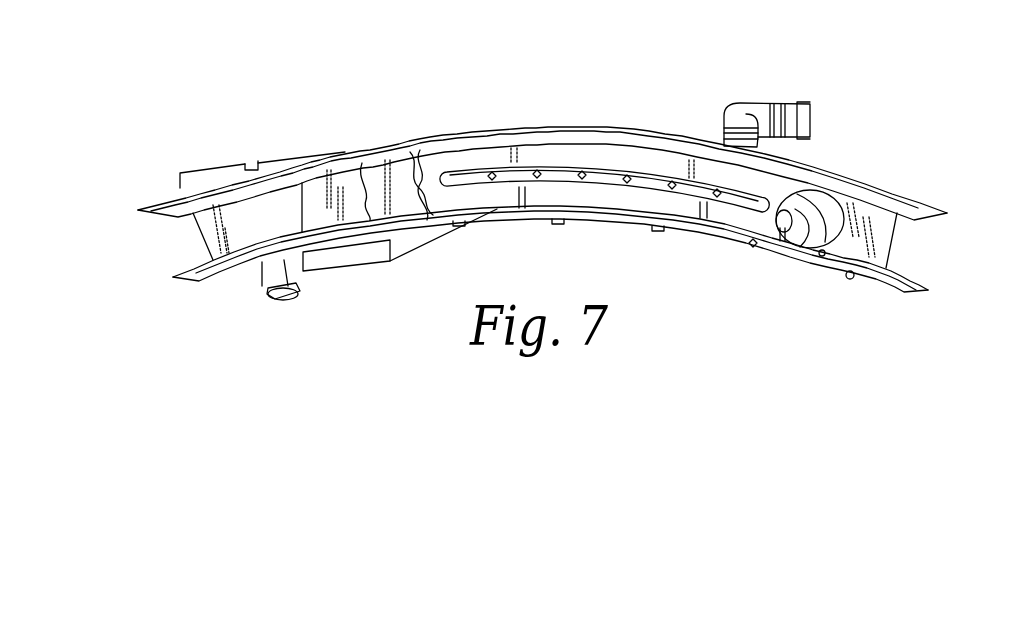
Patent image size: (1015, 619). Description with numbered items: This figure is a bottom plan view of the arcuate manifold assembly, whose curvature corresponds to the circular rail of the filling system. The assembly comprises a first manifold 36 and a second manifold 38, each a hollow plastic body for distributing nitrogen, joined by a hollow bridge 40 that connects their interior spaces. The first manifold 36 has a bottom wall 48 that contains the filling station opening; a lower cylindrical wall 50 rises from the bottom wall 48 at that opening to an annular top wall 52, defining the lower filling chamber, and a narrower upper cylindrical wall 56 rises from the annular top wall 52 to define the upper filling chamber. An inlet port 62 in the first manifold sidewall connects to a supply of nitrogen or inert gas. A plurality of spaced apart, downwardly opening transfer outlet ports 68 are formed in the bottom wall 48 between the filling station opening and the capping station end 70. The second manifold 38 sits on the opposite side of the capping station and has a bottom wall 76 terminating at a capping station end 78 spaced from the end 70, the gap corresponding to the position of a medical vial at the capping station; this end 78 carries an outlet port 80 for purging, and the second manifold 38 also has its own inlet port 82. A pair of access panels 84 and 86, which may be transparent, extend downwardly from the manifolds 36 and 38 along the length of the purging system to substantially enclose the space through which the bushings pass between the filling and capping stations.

The first manifold 36 is at (903, 250).
The second manifold 38 is at (186, 236).
The bridge 40 is at (379, 270).
The bottom wall 48 is at (890, 227).
The lower cylindrical wall 50 is at (822, 192).
The annular top wall 52 is at (823, 250).
The upper cylindrical wall 56 is at (789, 212).
The inlet port 62 is at (748, 102).
The transfer outlet ports 68 is at (582, 181).
The capping station end 70 is at (416, 148).
The bottom wall 76 is at (302, 198).
The capping station end 78 is at (388, 147).
The outlet port 80 is at (363, 192).
The inlet port 82 is at (267, 290).
The access panel 84 is at (613, 127).
The access panel 86 is at (612, 220).